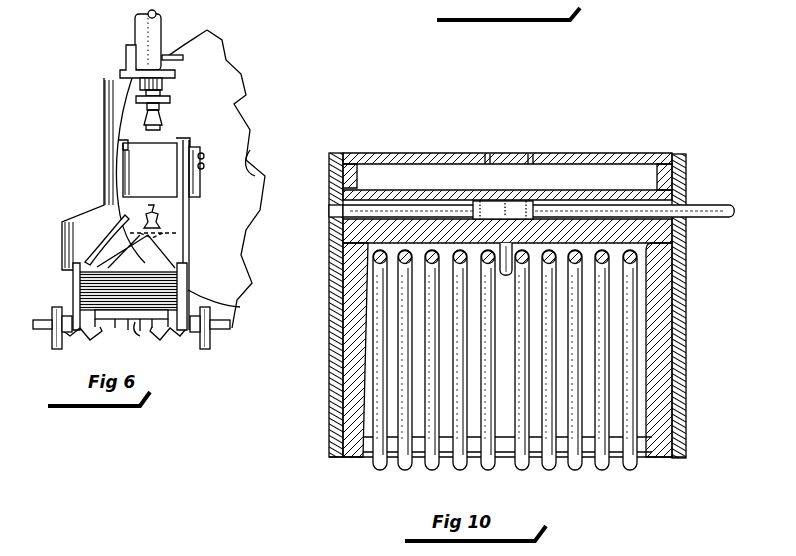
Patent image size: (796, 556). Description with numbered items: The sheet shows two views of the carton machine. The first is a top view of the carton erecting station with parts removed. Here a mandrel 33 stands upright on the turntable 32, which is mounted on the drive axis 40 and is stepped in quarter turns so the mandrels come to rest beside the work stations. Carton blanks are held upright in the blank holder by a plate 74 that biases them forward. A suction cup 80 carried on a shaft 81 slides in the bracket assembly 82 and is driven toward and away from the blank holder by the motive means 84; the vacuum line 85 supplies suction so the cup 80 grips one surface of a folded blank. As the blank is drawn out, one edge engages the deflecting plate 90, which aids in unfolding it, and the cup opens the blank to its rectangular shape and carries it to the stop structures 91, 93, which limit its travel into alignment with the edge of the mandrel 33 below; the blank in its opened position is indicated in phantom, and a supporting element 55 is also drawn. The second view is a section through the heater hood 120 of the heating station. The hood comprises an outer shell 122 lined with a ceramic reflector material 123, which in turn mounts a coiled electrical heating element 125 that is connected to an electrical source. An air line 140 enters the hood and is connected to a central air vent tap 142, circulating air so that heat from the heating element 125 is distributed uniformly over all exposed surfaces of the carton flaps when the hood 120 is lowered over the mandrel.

In FIG. 6, the turntable 32 is at (236, 100).
In FIG. 6, the mandrel 33 is at (94, 179).
In FIG. 6, the drive axis 40 is at (257, 160).
In FIG. 6, the support frame 55 is at (172, 247).
In FIG. 6, the plate 74 is at (134, 346).
In FIG. 6, the suction cup 80 is at (160, 125).
In FIG. 6, the shaft 81 is at (160, 118).
In FIG. 6, the bracket assembly 82 is at (126, 52).
In FIG. 6, the motive means 84 is at (156, 14).
In FIG. 6, the vacuum line 85 is at (167, 80).
In FIG. 6, the deflecting plate 90 is at (92, 250).
In FIG. 6, the stop structure 91 is at (193, 140).
In FIG. 6, the stop structure 93 is at (118, 140).
In FIG. 10, the hood structure 120 is at (426, 138).
In FIG. 10, the outer shell 122 is at (330, 432).
In FIG. 10, the ceramic reflector material 123 is at (348, 457).
In FIG. 10, the coiled electrical heating element 125 is at (607, 472).
In FIG. 10, the air line 140 is at (699, 205).
In FIG. 10, the central air vent tap 142 is at (503, 262).